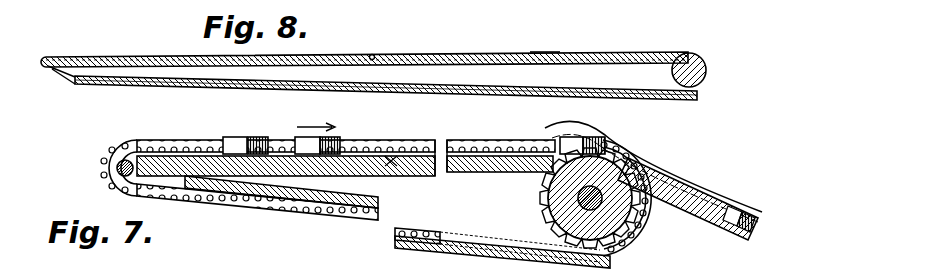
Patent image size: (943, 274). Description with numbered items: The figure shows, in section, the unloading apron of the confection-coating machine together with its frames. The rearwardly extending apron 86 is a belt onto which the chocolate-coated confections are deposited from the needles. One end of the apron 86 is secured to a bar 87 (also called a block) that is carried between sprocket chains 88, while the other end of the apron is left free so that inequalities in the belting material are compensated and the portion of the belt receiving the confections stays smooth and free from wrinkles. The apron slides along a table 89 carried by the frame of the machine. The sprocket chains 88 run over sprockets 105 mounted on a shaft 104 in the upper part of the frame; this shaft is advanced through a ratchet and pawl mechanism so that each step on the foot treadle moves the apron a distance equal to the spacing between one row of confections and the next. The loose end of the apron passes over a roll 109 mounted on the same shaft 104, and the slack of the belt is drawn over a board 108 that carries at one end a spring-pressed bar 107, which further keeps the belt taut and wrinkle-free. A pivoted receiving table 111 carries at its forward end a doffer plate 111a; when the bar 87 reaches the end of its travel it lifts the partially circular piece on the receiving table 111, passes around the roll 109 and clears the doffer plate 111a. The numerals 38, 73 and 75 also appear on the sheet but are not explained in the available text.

In FIG. 8, the apron 86 is at (487, 55).
In FIG. 7, the apron 86 is at (195, 152).
In FIG. 8, the bar 87 is at (374, 57).
In FIG. 7, the bar 87 is at (392, 158).
In FIG. 7, the sprocket chains 88 is at (480, 140).
In FIG. 8, the table 89 is at (543, 57).
In FIG. 7, the table 89 is at (395, 173).
In FIG. 7, the shaft 104 is at (586, 198).
In FIG. 7, the sprockets 105 is at (548, 190).
In FIG. 8, the spring-pressed bar 107 is at (50, 68).
In FIG. 7, the spring-pressed bar 107 is at (172, 192).
In FIG. 8, the board 108 is at (560, 93).
In FIG. 7, the board 108 is at (306, 219).
In FIG. 8, the roll 109 is at (697, 63).
In FIG. 7, the roll 109 is at (638, 229).
In FIG. 7, the receiving table 111 is at (701, 192).
In FIG. 7, the doffer plate 111a is at (668, 180).
In FIG. 7, the frame member 38 is at (233, 266).
In FIG. 7, the lower track 73 is at (477, 251).
In FIG. 7, the support 75 is at (276, 273).